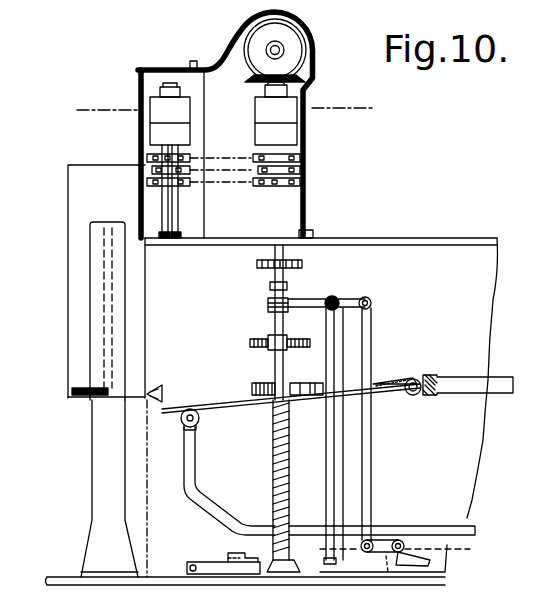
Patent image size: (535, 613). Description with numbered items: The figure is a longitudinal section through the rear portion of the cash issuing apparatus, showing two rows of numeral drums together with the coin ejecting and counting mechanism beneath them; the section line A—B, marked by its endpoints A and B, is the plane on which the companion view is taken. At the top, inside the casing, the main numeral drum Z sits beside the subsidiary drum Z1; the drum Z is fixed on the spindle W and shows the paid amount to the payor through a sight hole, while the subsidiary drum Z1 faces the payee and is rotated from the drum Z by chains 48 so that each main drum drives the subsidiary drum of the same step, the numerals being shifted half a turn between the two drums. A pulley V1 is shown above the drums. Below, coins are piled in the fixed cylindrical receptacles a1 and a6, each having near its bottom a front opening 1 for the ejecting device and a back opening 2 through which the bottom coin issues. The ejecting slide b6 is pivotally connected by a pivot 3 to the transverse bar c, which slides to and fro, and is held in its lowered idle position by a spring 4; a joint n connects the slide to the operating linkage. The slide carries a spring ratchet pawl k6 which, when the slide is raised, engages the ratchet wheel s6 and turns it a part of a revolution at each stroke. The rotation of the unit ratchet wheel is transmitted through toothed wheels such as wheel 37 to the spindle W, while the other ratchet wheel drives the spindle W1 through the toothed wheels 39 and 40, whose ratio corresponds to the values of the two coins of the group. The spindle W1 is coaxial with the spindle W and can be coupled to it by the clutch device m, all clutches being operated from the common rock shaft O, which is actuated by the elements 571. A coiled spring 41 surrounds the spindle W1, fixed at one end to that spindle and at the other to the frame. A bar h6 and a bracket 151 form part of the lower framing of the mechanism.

The section line A—B endpoint A is at (89, 111).
The section line A—B endpoint B is at (356, 109).
The subsidiary drum Z1 is at (136, 140).
The numeral drum Z is at (282, 133).
The spindle W is at (312, 205).
The pulley wheel V1 is at (285, 44).
The chains 48 is at (240, 157).
The cylindrical receptacle a1 is at (68, 193).
The cylindrical receptacle a6 is at (68, 340).
The back opening 2 is at (74, 392).
The front opening 1 is at (150, 390).
The ejecting slide b6 is at (205, 409).
The pivot joint n is at (183, 428).
The toothed wheel 37 is at (258, 264).
The clutch device m is at (297, 300).
The toothed wheel 39 is at (258, 343).
The toothed wheel 40 is at (297, 340).
The ratchet wheel s6 is at (255, 383).
The spring ratchet pawl k6 is at (316, 383).
The rock shaft O is at (343, 286).
The actuating elements 571 is at (366, 318).
The spring 4 is at (401, 375).
The pivot 3 is at (410, 396).
The transverse bar c is at (434, 395).
The coiled spring 41 is at (278, 486).
The spindle W1 is at (295, 492).
The horizontal bar h6 is at (387, 530).
The bottom bracket 151 is at (227, 560).